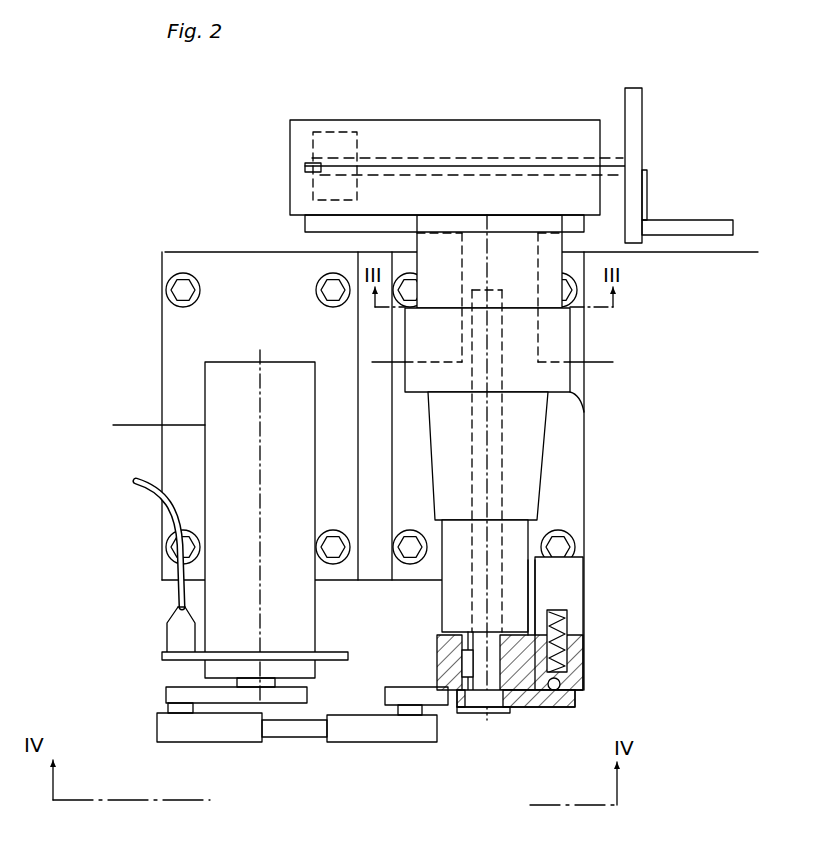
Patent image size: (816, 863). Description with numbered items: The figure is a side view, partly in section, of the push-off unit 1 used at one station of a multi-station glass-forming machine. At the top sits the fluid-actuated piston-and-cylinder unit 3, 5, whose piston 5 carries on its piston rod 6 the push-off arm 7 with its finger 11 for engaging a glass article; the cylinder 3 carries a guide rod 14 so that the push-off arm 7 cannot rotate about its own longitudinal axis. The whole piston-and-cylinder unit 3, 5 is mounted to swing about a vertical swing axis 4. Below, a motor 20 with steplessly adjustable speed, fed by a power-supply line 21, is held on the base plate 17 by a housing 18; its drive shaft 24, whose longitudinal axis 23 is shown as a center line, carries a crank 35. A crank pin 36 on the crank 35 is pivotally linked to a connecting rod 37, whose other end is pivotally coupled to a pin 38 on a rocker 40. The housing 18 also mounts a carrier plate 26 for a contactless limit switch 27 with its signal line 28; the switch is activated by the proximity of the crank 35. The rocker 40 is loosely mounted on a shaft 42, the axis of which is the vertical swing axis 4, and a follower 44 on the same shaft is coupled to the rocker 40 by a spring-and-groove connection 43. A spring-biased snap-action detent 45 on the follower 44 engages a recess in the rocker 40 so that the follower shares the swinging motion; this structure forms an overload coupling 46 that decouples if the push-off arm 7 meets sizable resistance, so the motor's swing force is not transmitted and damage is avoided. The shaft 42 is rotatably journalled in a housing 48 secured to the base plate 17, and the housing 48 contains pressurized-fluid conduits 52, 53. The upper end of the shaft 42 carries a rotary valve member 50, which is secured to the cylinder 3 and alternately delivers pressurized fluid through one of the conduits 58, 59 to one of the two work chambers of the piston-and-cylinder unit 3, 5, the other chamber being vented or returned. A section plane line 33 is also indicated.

The push-off unit 1 is at (648, 793).
The cylinder 3 is at (456, 120).
The vertical swing axis 4 is at (485, 458).
The piston 5 is at (340, 132).
The piston rod 6 is at (613, 160).
The push-off arm 7 is at (645, 100).
The finger 11 is at (704, 220).
The guide rod 14 is at (313, 170).
The base plate 17 is at (374, 582).
The housing 18 is at (162, 345).
The motor 20 is at (205, 443).
The power-supply line 21 is at (115, 425).
The longitudinal axis of the motor drive shaft 23 is at (262, 458).
The motor drive shaft 24 is at (266, 685).
The carrier plate 26 is at (346, 652).
The contactless limit switch 27 is at (167, 632).
The signal line 28 is at (160, 508).
The base plate 33 is at (165, 251).
The crank 35 is at (166, 690).
The crank pin 36 is at (157, 718).
The connecting rod 37 is at (278, 740).
The pin 38 is at (395, 708).
The rocker 40 is at (532, 707).
The shaft 42 is at (502, 490).
The spring-and-groove connection 43 is at (475, 662).
The follower 44 is at (585, 583).
The spring-biased snap-action detent 45 is at (568, 672).
The overload coupling 46 is at (590, 697).
The housing 48 is at (576, 398).
The rotary valve member 50 is at (562, 248).
The pressurized-fluid conduit 52 is at (600, 363).
The pressurized-fluid conduit 53 is at (395, 363).
The pressurized-fluid conduit 58 is at (585, 232).
The pressurized-fluid conduit 59 is at (305, 232).